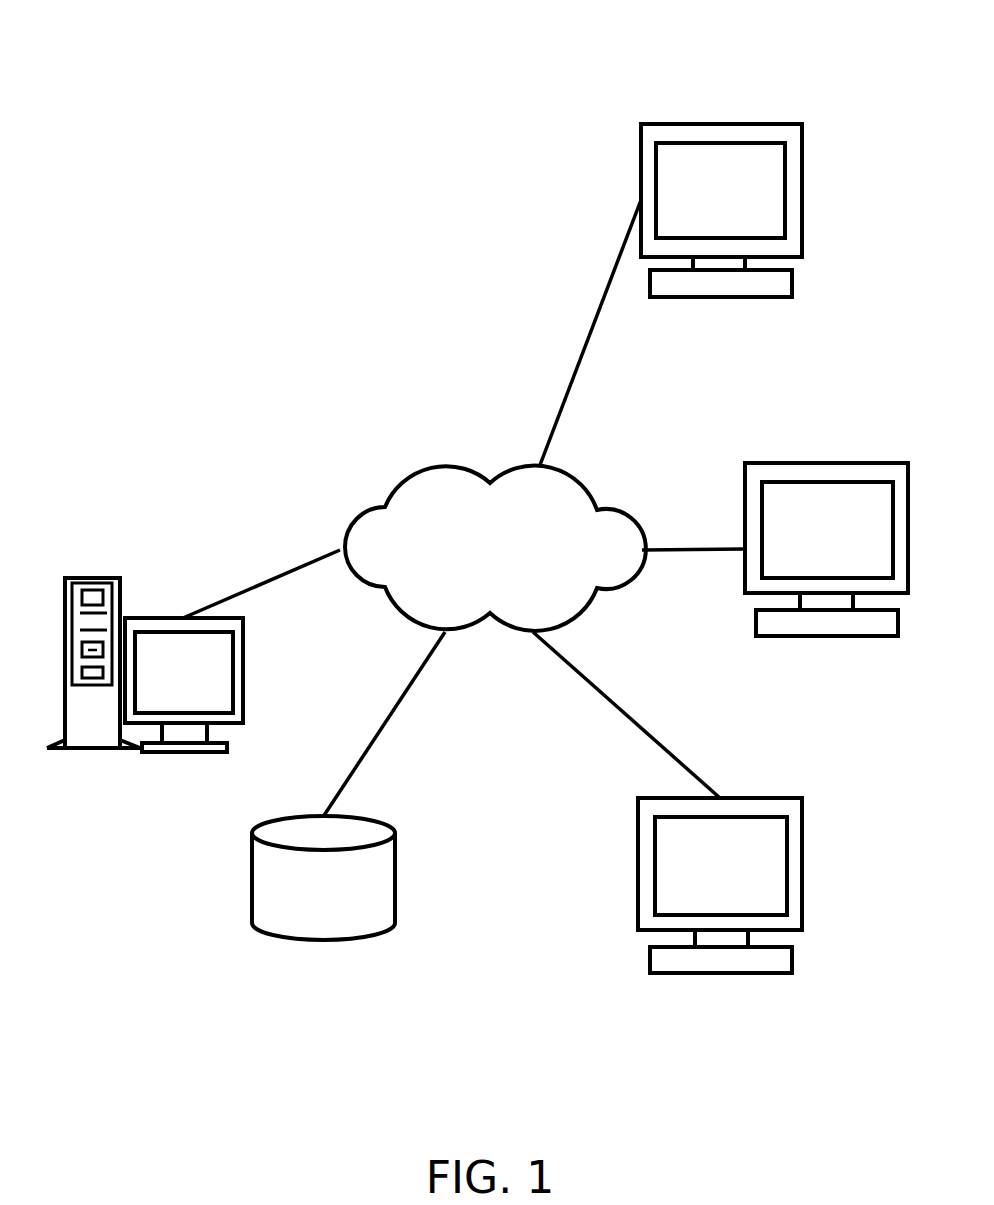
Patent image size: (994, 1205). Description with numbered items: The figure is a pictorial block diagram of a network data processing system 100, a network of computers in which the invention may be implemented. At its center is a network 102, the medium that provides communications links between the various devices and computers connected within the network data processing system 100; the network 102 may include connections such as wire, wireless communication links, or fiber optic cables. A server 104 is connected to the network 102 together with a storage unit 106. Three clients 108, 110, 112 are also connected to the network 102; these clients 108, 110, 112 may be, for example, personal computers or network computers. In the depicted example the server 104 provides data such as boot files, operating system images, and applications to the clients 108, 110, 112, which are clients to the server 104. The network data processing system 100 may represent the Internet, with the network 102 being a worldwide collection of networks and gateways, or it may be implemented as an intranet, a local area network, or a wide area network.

The network data processing system 100 is at (535, 887).
The network 102 is at (438, 480).
The server 104 is at (155, 627).
The storage unit 106 is at (297, 923).
The client 108 is at (693, 137).
The client 110 is at (800, 472).
The client 112 is at (772, 962).